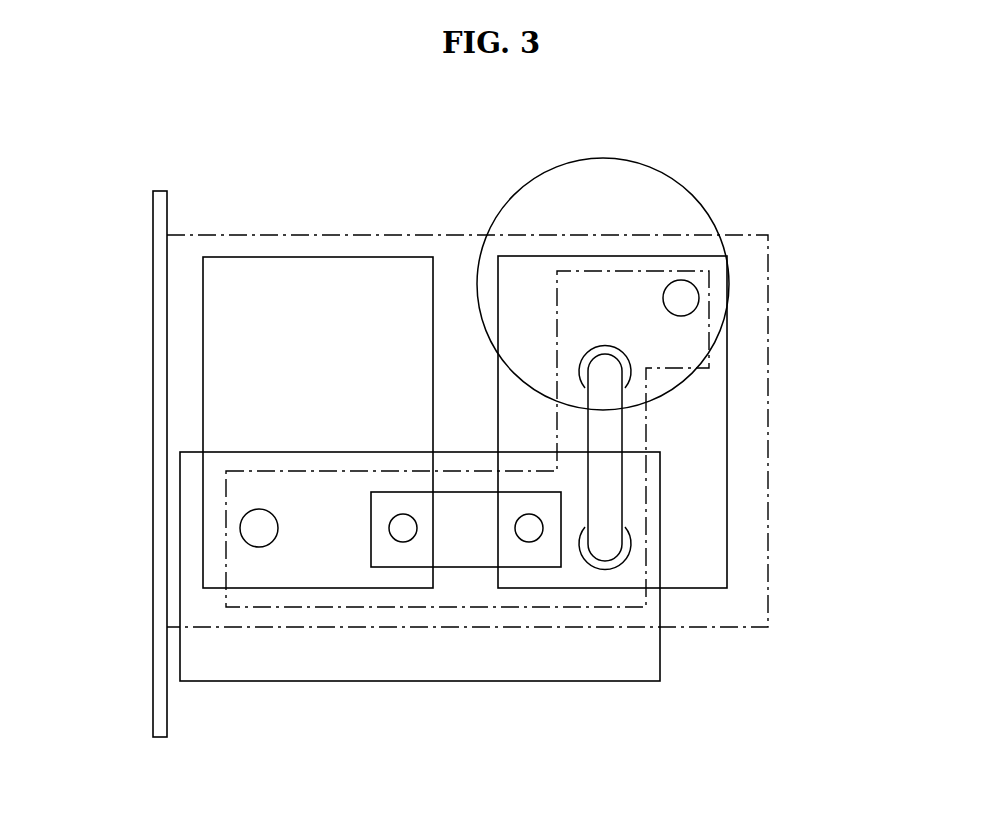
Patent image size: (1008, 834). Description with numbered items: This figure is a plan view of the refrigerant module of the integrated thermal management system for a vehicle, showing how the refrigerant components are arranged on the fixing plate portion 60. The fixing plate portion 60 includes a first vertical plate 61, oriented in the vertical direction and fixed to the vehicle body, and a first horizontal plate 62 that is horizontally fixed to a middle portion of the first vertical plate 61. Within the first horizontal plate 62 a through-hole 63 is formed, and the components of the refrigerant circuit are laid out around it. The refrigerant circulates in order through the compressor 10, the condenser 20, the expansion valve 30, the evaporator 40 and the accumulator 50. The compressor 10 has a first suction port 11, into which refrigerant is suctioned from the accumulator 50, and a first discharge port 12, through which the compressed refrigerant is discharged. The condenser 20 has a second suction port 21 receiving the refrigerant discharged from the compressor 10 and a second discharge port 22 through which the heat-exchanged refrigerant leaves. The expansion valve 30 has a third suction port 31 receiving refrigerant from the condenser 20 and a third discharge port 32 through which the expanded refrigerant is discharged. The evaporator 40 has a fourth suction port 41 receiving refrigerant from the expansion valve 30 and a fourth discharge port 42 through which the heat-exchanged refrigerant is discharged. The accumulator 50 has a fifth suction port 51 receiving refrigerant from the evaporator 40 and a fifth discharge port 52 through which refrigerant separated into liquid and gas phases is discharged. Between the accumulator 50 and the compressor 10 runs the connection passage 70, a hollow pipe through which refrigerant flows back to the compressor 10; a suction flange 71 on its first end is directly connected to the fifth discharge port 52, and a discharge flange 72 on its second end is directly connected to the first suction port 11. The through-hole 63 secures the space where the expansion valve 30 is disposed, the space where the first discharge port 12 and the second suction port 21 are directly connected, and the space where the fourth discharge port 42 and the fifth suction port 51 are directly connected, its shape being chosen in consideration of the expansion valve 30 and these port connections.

The compressor 10 is at (246, 681).
The first suction port 11 is at (628, 560).
The first discharge port 12 is at (155, 530).
The condenser 20 is at (317, 264).
The second suction port 21 is at (247, 530).
The second discharge port 22 is at (379, 633).
The expansion valve 30 is at (470, 553).
The third suction port 31 is at (398, 543).
The third discharge port 32 is at (558, 633).
The evaporator 40 is at (727, 391).
The fourth suction port 41 is at (529, 542).
The fourth discharge port 42 is at (775, 298).
The accumulator 50 is at (688, 186).
The fifth suction port 51 is at (700, 296).
The fifth discharge port 52 is at (539, 252).
The fixing plate portion 60 is at (464, 494).
The first vertical plate 61 is at (156, 700).
The first horizontal plate 62 is at (768, 573).
The through-hole 63 is at (646, 430).
The connection passage 70 is at (614, 485).
The suction flange 71 is at (604, 346).
The discharge flange 72 is at (696, 617).